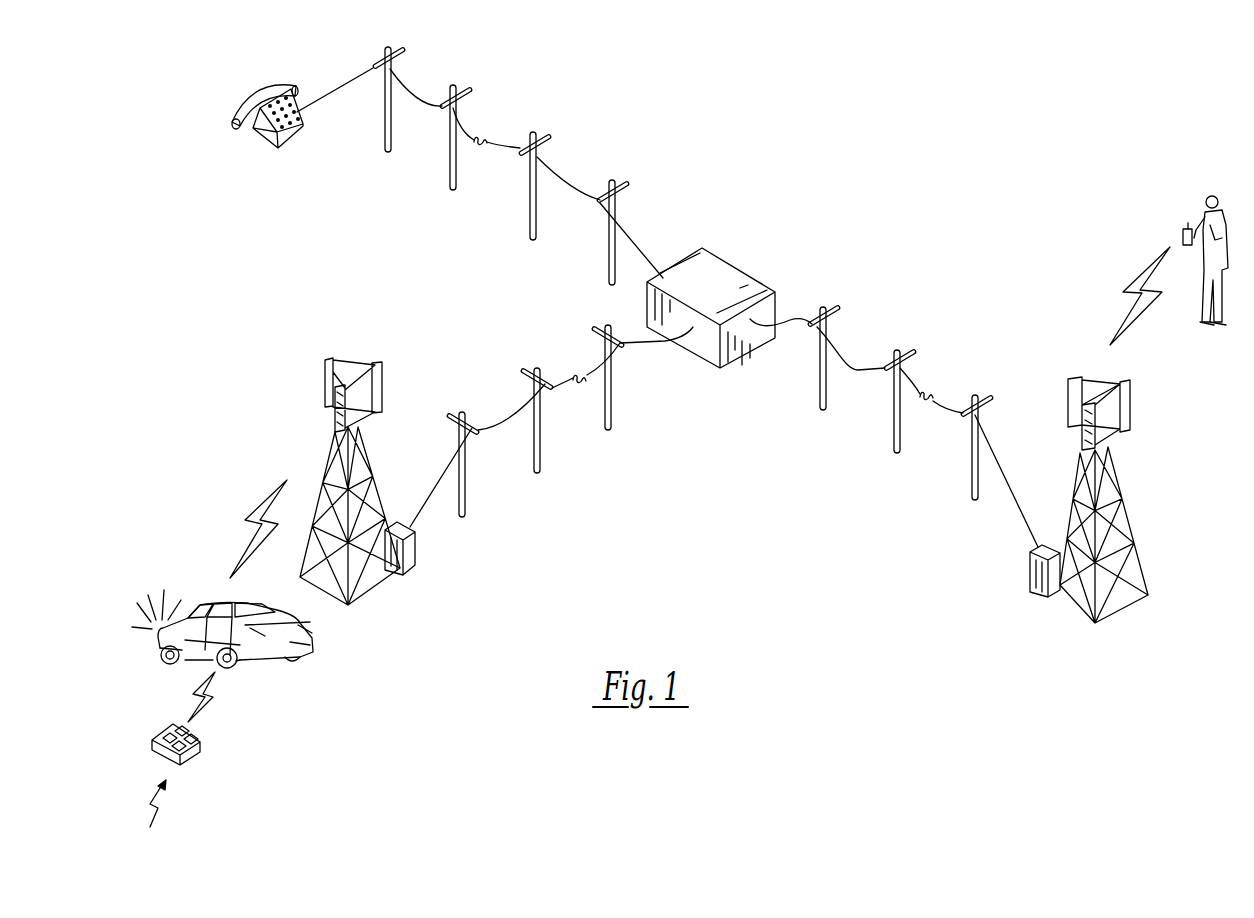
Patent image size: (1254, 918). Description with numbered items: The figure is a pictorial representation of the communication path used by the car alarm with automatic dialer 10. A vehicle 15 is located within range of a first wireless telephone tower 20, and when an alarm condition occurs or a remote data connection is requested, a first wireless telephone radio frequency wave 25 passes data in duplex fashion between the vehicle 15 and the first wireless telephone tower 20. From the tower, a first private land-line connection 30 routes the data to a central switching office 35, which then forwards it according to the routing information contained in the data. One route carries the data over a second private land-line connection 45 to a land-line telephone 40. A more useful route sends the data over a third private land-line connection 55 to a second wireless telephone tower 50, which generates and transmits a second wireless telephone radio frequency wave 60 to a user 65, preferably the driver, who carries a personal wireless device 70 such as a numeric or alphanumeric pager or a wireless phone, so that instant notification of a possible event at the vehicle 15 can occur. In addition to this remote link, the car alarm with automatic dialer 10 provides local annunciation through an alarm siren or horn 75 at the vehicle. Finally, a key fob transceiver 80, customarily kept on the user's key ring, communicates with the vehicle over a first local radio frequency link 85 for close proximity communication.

The car alarm with automatic dialer 10 is at (152, 816).
The vehicle 15 is at (313, 637).
The first wireless telephone tower 20 is at (332, 457).
The first wireless telephone radio frequency wave 25 is at (255, 507).
The first private land-line connection 30 is at (510, 417).
The central switching office 35 is at (722, 278).
The land-line telephone 40 is at (238, 96).
The second private land-line connection 45 is at (568, 183).
The second wireless telephone tower 50 is at (1120, 497).
The third private land-line connection 55 is at (858, 370).
The second wireless telephone radio frequency wave 60 is at (1135, 275).
The user 65 is at (1208, 193).
The personal wireless device 70 is at (1182, 228).
The alarm siren or horn 75 is at (152, 607).
The key fob transceiver 80 is at (200, 744).
The first local radio frequency link 85 is at (212, 698).